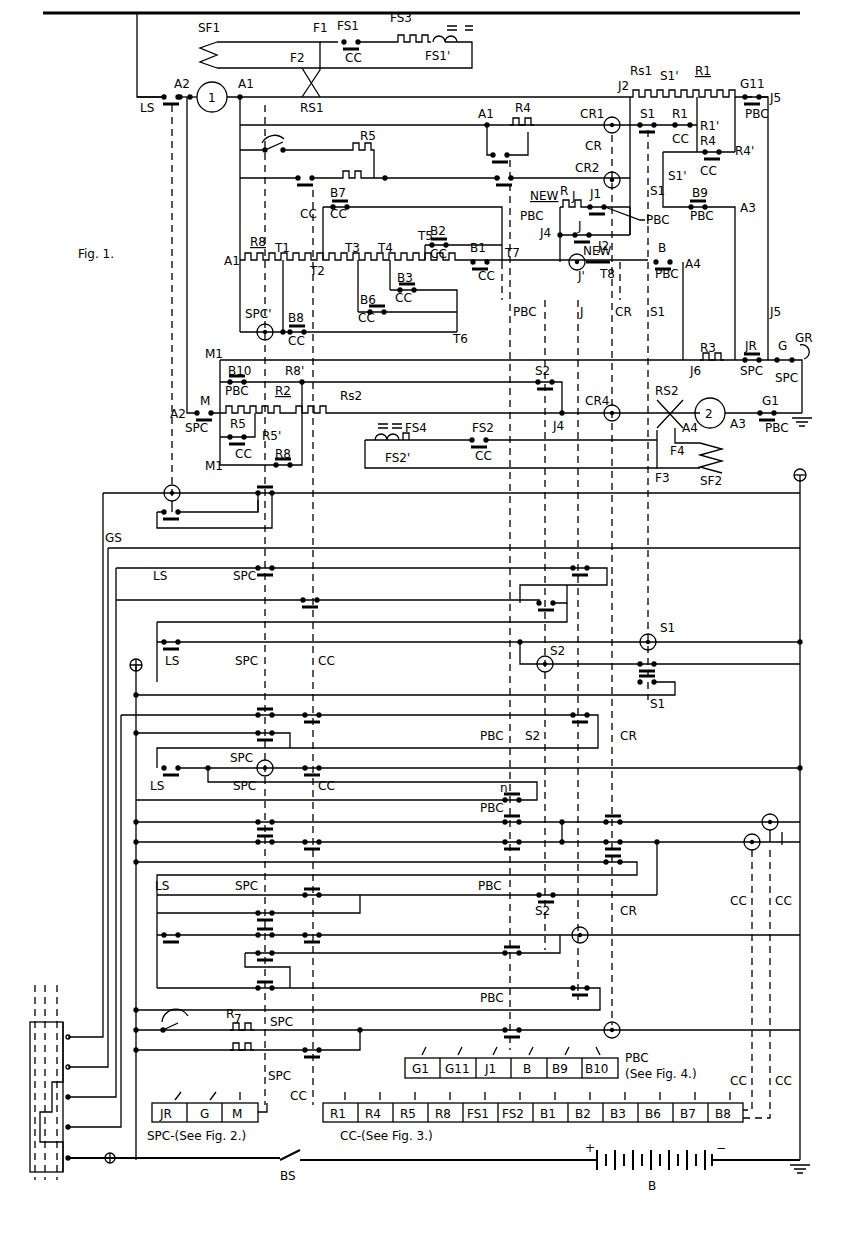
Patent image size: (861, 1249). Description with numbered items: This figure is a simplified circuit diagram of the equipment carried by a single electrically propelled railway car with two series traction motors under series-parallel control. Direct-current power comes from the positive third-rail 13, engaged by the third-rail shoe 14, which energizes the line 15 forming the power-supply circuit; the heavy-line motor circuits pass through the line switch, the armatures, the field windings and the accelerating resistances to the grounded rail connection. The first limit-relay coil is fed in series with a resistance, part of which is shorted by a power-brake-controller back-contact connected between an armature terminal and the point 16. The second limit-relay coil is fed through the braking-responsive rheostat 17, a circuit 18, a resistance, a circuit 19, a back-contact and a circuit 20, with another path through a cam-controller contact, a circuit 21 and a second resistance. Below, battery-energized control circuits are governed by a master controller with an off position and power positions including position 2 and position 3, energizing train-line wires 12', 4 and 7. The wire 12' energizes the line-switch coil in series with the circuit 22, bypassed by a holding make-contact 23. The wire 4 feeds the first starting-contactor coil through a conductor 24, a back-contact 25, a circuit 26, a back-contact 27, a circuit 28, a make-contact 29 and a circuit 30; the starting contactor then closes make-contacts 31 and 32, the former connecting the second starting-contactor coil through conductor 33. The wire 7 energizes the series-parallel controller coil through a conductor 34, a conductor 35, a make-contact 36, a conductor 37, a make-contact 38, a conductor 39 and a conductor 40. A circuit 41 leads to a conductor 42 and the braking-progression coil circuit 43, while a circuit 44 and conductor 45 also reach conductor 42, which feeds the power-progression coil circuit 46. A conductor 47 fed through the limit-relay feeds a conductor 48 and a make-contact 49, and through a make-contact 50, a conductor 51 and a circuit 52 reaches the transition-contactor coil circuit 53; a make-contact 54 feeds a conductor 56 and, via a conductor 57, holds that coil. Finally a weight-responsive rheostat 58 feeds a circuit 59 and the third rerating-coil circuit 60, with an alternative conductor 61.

The trolley-wire or third-rail 13 is at (421, 21).
The third-rail shoe 14 is at (135, 55).
The line 15 is at (141, 97).
The point 16 is at (511, 145).
The braking-responsive rheostat 17 is at (264, 150).
The circuit 18 is at (317, 150).
The circuit 19 is at (420, 175).
The circuit 20 is at (540, 180).
The circuit 21 is at (327, 176).
The circuit 22 is at (248, 504).
The make-contact of line-switch 23 is at (182, 502).
The conductor 24 is at (417, 569).
The back-contact of transition-contactor 25 is at (592, 563).
The circuit 26 is at (378, 612).
The back-contact of second starting-contactor 27 is at (555, 598).
The circuit 28 is at (467, 658).
The make-contact of line-switch 29 is at (184, 632).
The circuit 30 is at (656, 643).
The make-contact of first starting-contactor 31 is at (660, 657).
The make-contact of first starting-contactor 32 is at (660, 677).
The conductor 33 is at (585, 664).
The conductor 34 is at (287, 716).
The conductor 35 is at (384, 716).
The make-contact of transition-contactor 36 is at (580, 713).
The conductor 37 is at (369, 746).
The make-contact of line-switch 38 is at (186, 772).
The conductor 39 is at (469, 784).
The conductor 40 is at (306, 767).
The circuit 41 is at (395, 822).
The conductor 42 is at (560, 823).
The energizing-circuit 43 is at (680, 822).
The circuit 44 is at (284, 841).
The conductor 45 is at (395, 842).
The energizing-conductor 46 is at (682, 863).
The conductor 47 is at (466, 918).
The conductor 48 is at (261, 898).
The make-contact of second starting-contactor 49 is at (548, 890).
The make-contact of line-switch 50 is at (180, 925).
The conductor 51 is at (222, 924).
The circuit 52 is at (300, 930).
The energizing circuit 53 is at (571, 936).
The make-contact of transition-contactor 54 is at (587, 989).
The conductor 56 is at (367, 981).
The conductor 57 is at (395, 953).
The weight-responsive rheostat 58 is at (467, 1029).
The circuit 59 is at (251, 1032).
The energizing-circuit 60 is at (550, 1030).
The conductor 61 is at (278, 1051).
The train-line wire 12' is at (434, 758).
The master-controller position 3 is at (62, 1079).
The master-controller position 2 is at (46, 1004).
The train-line wire 4 is at (328, 826).
The train-line wire 7 is at (328, 913).